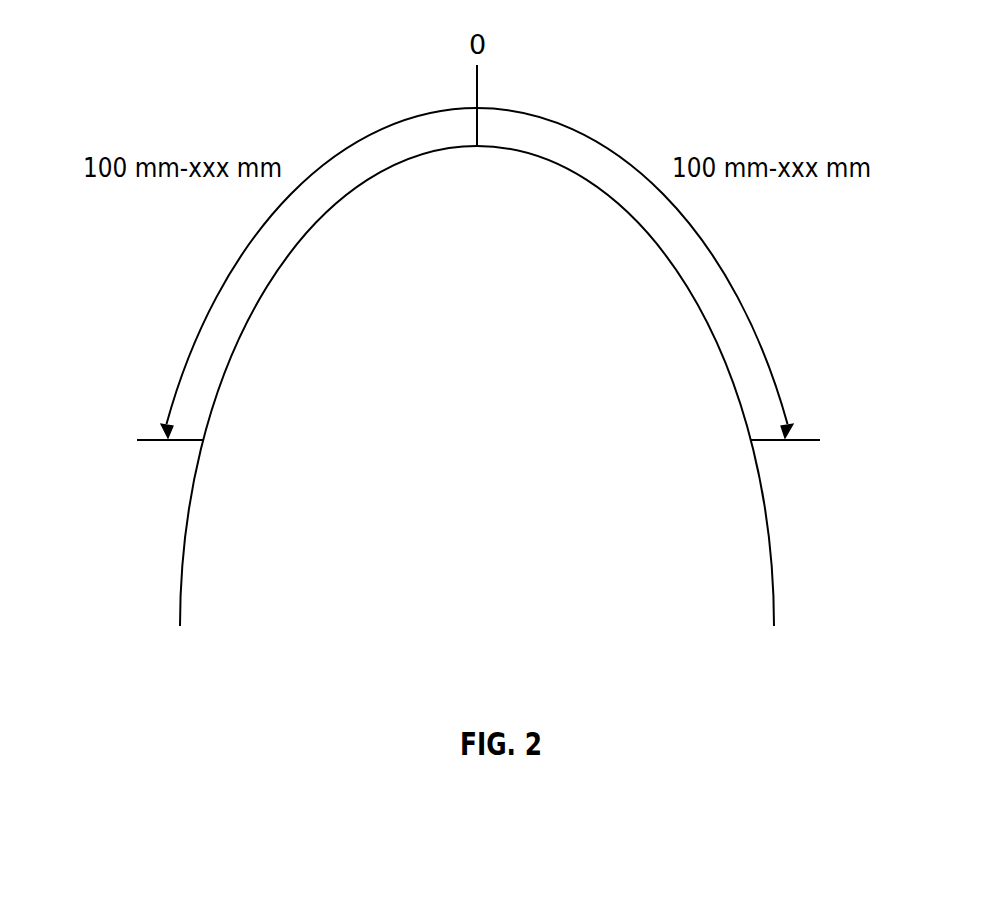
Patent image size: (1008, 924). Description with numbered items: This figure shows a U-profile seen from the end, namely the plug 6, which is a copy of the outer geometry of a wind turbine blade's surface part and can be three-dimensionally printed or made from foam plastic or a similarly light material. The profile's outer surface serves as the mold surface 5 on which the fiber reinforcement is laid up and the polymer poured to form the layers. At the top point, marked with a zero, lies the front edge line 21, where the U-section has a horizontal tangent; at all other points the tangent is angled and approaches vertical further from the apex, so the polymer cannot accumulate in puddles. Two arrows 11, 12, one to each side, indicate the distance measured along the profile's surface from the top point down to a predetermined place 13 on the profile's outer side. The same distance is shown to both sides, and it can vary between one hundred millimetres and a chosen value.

The mold surface 5 is at (183, 560).
The plug 6 is at (353, 550).
The arrow 11 is at (790, 433).
The arrow 12 is at (164, 433).
The predetermined place 13 is at (200, 442).
The front edge line 21 is at (478, 101).